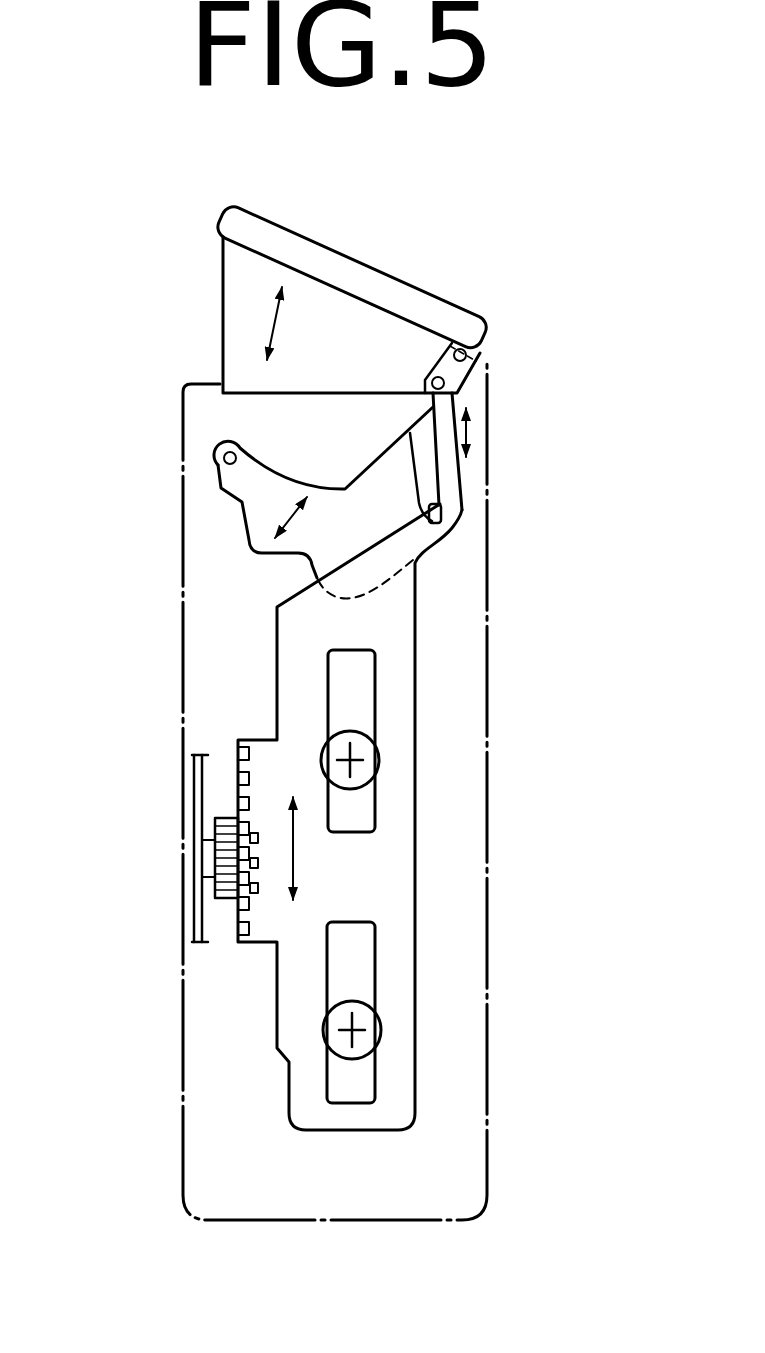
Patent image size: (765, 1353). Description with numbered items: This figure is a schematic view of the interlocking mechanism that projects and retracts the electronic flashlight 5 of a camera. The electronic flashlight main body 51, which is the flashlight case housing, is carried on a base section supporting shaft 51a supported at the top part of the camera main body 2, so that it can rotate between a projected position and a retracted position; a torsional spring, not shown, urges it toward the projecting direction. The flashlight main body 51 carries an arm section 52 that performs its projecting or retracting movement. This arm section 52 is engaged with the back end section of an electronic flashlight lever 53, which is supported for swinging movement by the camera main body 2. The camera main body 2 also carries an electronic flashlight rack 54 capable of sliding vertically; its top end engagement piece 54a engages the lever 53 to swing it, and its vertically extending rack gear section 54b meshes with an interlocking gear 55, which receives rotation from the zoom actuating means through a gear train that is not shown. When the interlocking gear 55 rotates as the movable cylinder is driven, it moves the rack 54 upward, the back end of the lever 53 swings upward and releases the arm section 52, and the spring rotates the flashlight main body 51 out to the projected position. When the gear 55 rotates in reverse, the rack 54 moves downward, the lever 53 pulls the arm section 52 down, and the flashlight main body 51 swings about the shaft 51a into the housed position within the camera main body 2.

The camera main body 2 is at (491, 712).
The electronic flashlight 5 is at (170, 327).
The electronic flashlight main body 51 is at (397, 287).
The base section supporting shaft 51a is at (483, 357).
The arm section 52 is at (430, 372).
The electronic flashlight lever 53 is at (362, 490).
The electronic flashlight rack 54 is at (283, 652).
The top end engagement piece 54a is at (447, 507).
The rack gear section 54b is at (238, 923).
The interlocking gear 55 is at (218, 833).